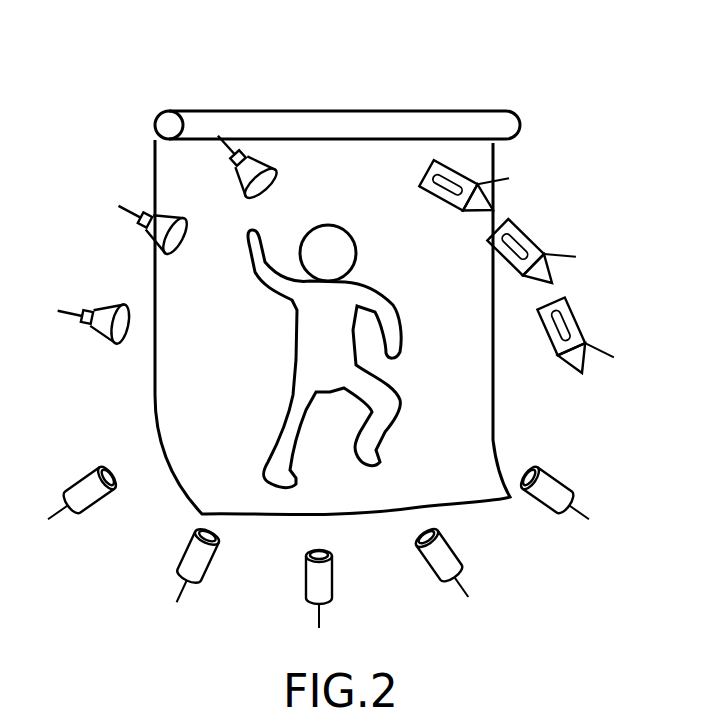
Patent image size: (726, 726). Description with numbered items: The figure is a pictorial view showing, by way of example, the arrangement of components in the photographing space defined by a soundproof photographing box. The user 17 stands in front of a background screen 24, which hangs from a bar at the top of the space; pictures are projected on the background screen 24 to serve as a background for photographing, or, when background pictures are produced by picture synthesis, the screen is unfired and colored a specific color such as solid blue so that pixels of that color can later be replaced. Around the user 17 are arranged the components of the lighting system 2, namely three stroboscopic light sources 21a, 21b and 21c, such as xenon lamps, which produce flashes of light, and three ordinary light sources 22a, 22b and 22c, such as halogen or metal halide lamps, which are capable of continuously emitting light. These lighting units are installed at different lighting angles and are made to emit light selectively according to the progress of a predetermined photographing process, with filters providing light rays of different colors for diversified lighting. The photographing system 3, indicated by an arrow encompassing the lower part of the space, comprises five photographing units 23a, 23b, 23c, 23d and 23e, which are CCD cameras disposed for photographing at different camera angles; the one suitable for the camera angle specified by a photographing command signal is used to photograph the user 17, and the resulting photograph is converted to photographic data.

The lighting system 2 is at (540, 141).
The background screen 24 is at (398, 110).
The user 17 is at (357, 253).
The stroboscopic light source 21a is at (96, 335).
The stroboscopic light source 21b is at (142, 228).
The stroboscopic light source 21c is at (262, 168).
The ordinary light source 22a is at (468, 180).
The ordinary light source 22b is at (523, 230).
The ordinary light source 22c is at (573, 312).
The photographing unit 23a is at (558, 473).
The photographing unit 23b is at (455, 547).
The photographing unit 23c is at (337, 578).
The photographing unit 23d is at (178, 550).
The photographing unit 23e is at (80, 480).
The photographing system 3 is at (529, 599).